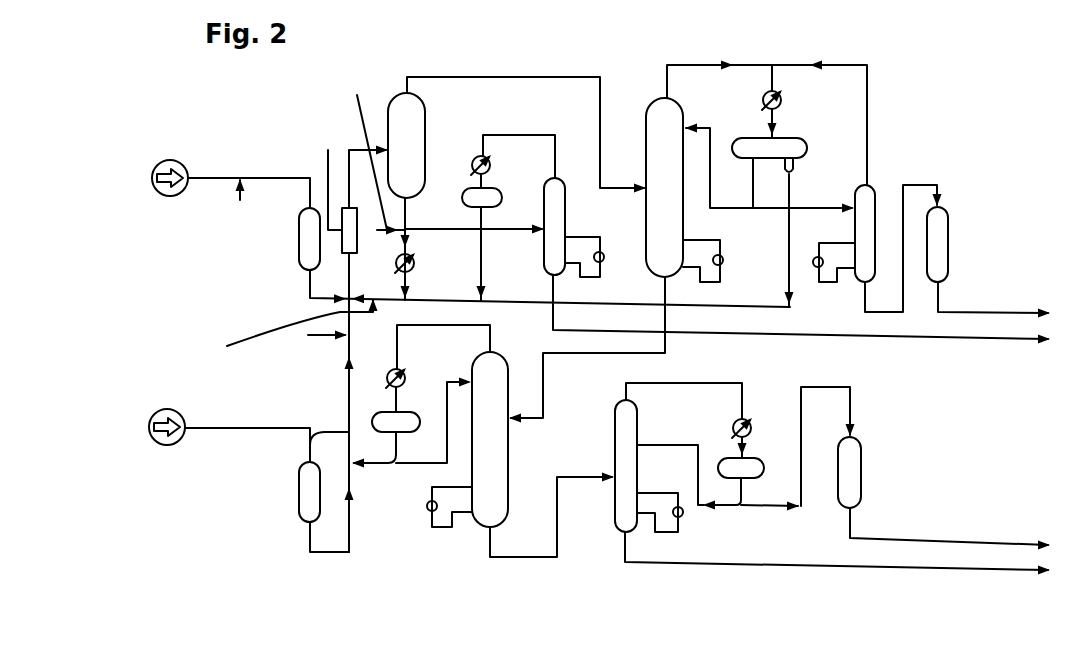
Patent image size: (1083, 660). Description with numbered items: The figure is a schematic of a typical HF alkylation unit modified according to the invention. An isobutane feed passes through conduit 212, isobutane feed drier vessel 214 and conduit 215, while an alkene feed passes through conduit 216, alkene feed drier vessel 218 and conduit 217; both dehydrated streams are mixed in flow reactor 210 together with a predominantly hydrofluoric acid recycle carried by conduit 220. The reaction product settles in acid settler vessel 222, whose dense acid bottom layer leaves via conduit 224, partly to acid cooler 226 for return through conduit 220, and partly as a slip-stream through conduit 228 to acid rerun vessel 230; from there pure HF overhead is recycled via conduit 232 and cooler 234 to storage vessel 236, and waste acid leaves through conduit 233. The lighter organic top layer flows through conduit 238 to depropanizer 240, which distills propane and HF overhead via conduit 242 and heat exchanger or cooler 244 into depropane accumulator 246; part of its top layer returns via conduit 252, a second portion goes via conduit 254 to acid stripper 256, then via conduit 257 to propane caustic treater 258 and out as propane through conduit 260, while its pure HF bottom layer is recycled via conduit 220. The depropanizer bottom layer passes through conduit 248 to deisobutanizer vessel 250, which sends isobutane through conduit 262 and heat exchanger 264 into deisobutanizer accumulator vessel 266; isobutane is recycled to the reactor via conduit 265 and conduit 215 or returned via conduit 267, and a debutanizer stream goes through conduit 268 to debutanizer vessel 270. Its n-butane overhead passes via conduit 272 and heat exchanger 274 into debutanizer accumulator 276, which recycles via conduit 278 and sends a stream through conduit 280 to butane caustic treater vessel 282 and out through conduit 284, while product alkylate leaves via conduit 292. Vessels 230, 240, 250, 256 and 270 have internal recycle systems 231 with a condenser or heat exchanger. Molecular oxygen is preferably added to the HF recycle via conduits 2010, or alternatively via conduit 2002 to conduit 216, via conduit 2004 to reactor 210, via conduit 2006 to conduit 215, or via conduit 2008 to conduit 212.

The conduit 2002 is at (238, 202).
The conduit 216 is at (232, 178).
The alkene feed drier vessel 218 is at (299, 233).
The conduit 217 is at (308, 272).
The conduit 2004 is at (322, 171).
The flow reactor 210 is at (347, 208).
The conduits 2010 is at (281, 218).
The acid settler vessel 222 is at (393, 97).
The conduit 224 is at (410, 207).
The acid cooler 226 is at (396, 265).
The conduit 228 is at (505, 230).
The conduit 238 is at (498, 77).
The conduit 232 is at (527, 135).
The cooler 234 is at (473, 156).
The storage vessel 236 is at (503, 194).
The acid rerun vessel 230 is at (565, 213).
The internal recycle systems 231 is at (614, 266).
The conduit 233 is at (1000, 340).
The conduit 220 is at (503, 302).
The conduit 262 is at (442, 325).
The depropanizer 240 is at (645, 118).
The conduit 242 is at (698, 63).
The heat exchanger or cooler 244 is at (789, 90).
The depropane accumulator 246 is at (803, 138).
The conduit 252 is at (742, 210).
The conduit 248 is at (667, 353).
The conduit 254 is at (874, 196).
The acid stripper 256 is at (877, 220).
The conduit 257 is at (920, 184).
The propane caustic treater 258 is at (950, 242).
The conduit 260 is at (994, 288).
The conduit 212 is at (202, 427).
The conduit 2008 is at (276, 420).
The conduit 215 is at (310, 441).
The isobutane feed drier vessel 214 is at (299, 492).
The conduit 2006 is at (322, 335).
The heat exchanger 264 is at (386, 386).
The deisobutanizer accumulator vessel 266 is at (418, 412).
The conduit 265 is at (385, 465).
The conduit 267 is at (448, 440).
The deisobutanizer vessel 250 is at (468, 527).
The conduit 268 is at (517, 557).
The debutanizer vessel 270 is at (615, 447).
The conduit 272 is at (680, 383).
The heat exchanger 274 is at (752, 414).
The debutanizer accumulator 276 is at (760, 462).
The conduit 278 is at (660, 445).
The conduit 280 is at (820, 387).
The butane caustic treater vessel 282 is at (861, 470).
The conduit 284 is at (906, 538).
The conduit 292 is at (786, 564).